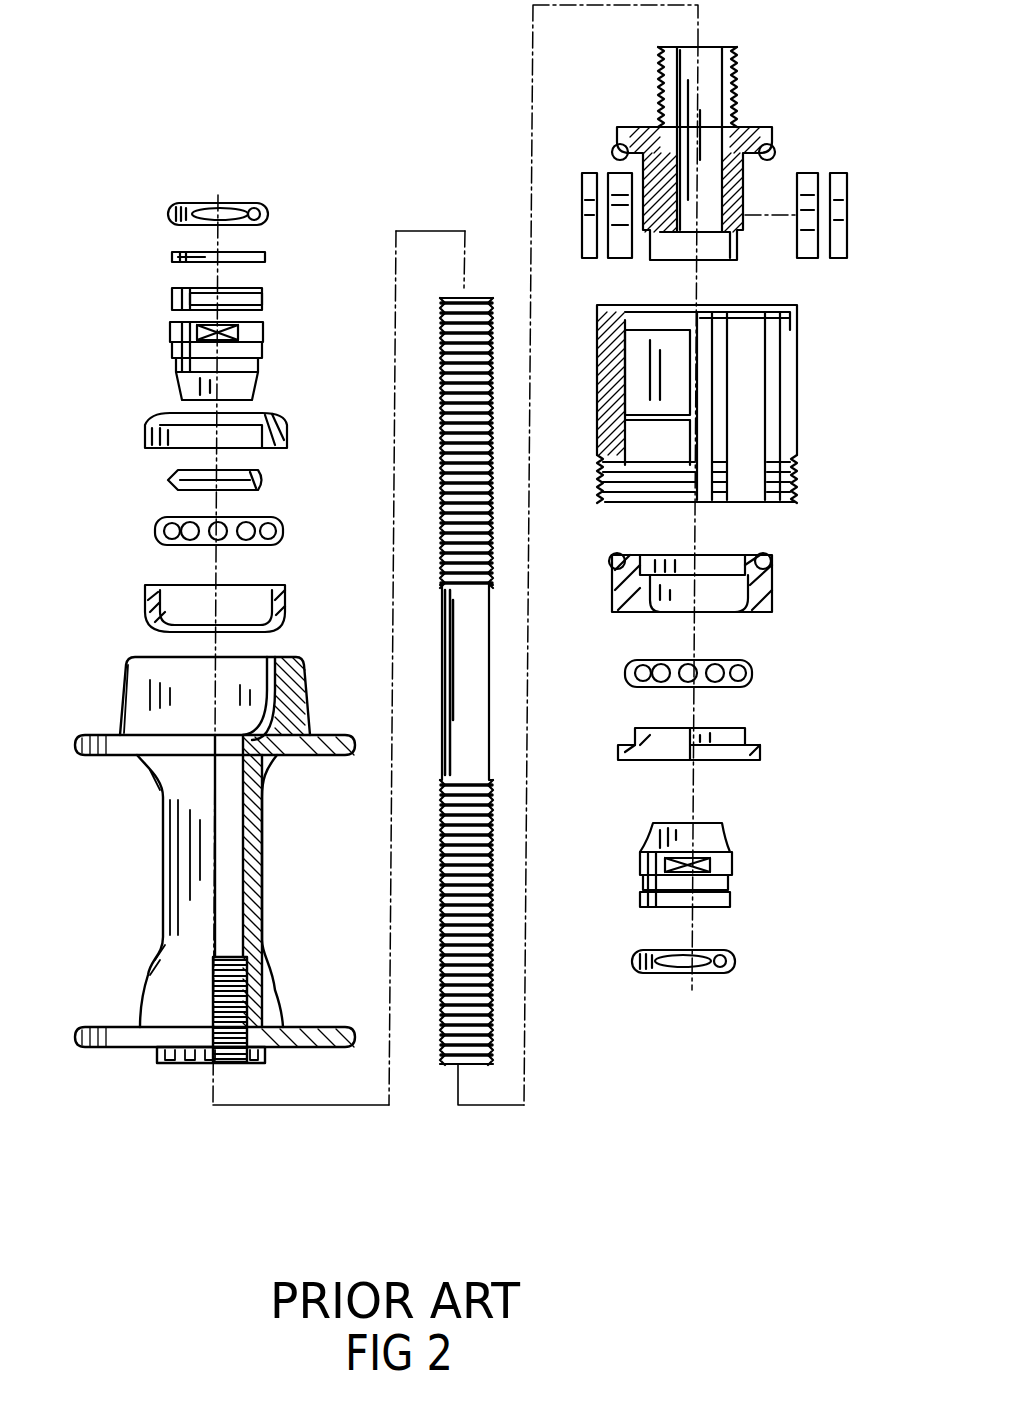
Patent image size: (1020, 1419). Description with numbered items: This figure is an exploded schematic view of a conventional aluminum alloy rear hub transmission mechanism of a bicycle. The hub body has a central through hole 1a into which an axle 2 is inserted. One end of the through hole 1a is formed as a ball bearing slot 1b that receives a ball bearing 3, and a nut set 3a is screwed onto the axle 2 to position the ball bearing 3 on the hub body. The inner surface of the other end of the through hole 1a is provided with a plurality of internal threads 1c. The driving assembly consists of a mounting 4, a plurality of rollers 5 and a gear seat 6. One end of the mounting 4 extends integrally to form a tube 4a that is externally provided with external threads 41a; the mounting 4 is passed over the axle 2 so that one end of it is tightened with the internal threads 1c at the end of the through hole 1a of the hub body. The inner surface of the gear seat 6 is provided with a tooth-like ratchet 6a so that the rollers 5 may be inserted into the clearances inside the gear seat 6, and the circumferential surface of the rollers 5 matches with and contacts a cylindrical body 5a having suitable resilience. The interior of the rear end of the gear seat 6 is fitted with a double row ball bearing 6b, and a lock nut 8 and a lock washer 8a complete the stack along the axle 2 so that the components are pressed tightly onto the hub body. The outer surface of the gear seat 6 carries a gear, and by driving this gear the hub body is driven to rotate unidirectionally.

The through hole 1a is at (222, 858).
The ball bearing slot 1b is at (268, 690).
The internal threads 1c is at (250, 975).
The axle 2 is at (434, 694).
The ball bearing 3 is at (288, 455).
The nut set 3a is at (270, 222).
The mounting 4 is at (731, 140).
The tube 4a is at (735, 62).
The external threads 41a is at (740, 96).
The rollers 5 is at (843, 215).
The cylindrical body 5a is at (814, 262).
The gear seat 6 is at (701, 404).
The tooth-like ratchet 6a is at (632, 375).
The double row ball bearing 6b is at (767, 607).
The lock nut 8 is at (745, 865).
The lock washer 8a is at (750, 962).